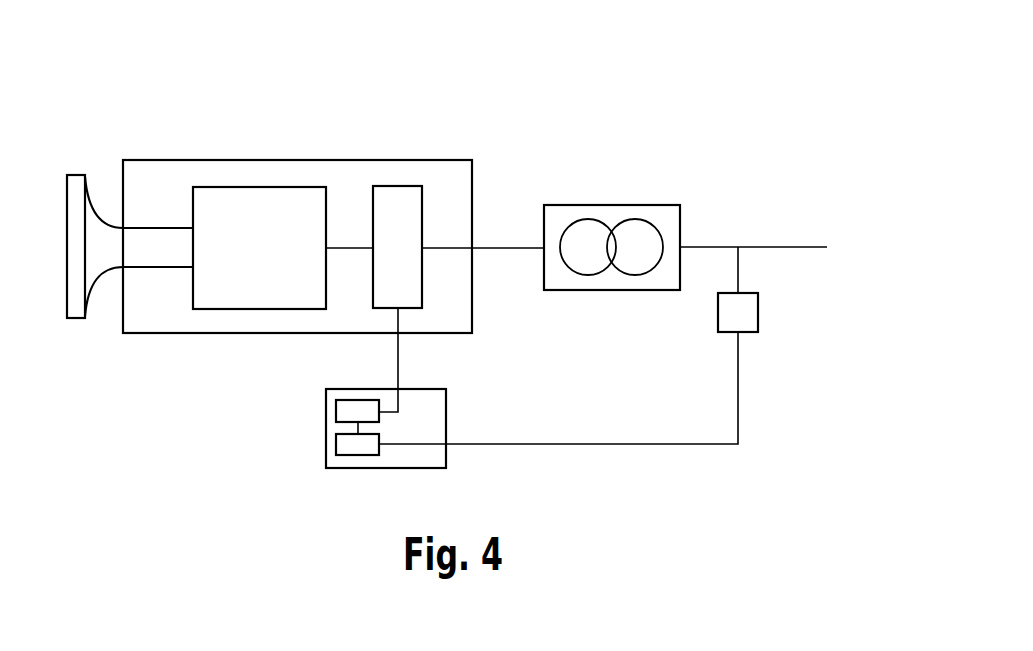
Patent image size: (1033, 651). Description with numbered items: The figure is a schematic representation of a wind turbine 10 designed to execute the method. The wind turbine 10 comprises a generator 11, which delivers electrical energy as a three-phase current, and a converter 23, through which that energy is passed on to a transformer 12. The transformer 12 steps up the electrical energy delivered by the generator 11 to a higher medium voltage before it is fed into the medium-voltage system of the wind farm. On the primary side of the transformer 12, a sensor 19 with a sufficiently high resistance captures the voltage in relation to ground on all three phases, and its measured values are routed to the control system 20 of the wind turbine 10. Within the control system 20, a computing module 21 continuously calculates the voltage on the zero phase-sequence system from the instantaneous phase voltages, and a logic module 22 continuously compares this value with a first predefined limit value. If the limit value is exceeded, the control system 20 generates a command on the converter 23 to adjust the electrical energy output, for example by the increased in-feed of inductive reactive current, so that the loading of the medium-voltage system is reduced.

The wind turbine 10 is at (180, 155).
The generator 11 is at (250, 187).
The transformer 12 is at (577, 205).
The sensor 19 is at (758, 312).
The control system 20 is at (446, 406).
The computing module 21 is at (336, 448).
The logic module 22 is at (336, 412).
The converter 23 is at (398, 186).